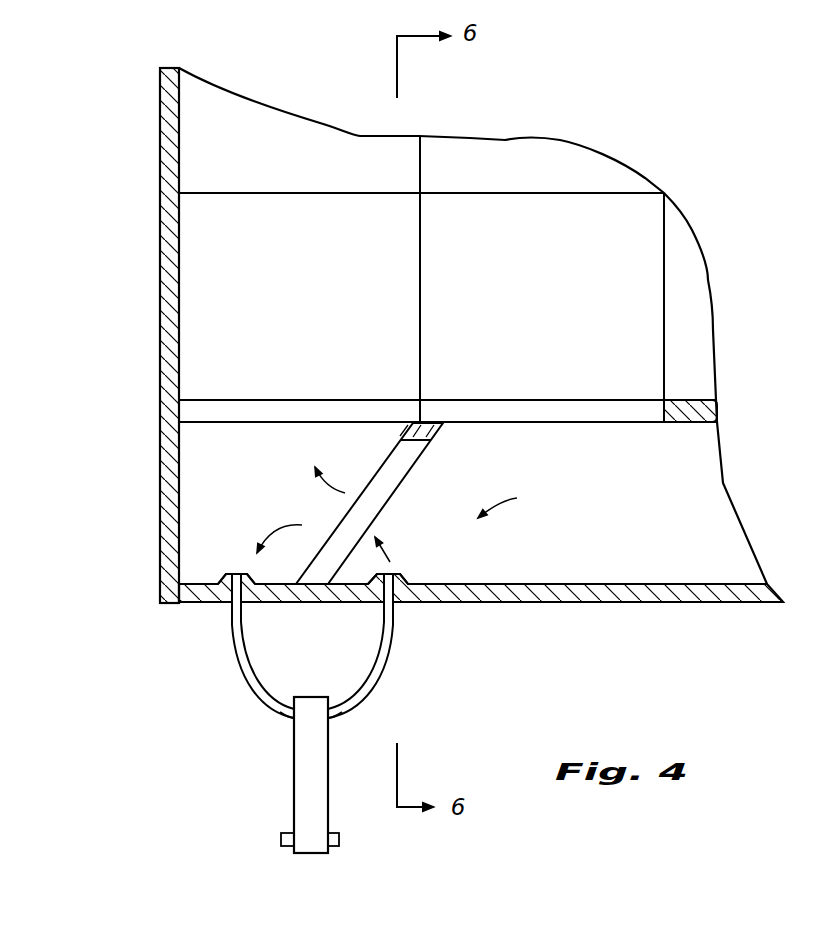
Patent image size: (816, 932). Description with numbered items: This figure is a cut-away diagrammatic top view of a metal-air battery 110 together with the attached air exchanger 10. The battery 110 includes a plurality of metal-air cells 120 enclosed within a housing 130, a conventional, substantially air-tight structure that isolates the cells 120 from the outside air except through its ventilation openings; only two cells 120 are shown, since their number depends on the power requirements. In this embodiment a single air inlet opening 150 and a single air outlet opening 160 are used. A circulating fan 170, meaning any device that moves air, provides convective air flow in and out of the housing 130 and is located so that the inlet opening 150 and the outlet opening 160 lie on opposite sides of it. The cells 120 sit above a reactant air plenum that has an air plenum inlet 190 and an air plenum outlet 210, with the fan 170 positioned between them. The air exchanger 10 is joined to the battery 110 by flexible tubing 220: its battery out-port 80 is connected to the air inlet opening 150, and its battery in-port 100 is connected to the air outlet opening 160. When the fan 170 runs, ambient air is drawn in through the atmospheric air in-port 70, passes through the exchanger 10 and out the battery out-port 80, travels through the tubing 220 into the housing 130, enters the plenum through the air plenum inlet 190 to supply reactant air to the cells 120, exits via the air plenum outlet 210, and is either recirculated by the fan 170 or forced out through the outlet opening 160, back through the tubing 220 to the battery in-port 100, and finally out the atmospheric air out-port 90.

The air exchanger 10 is at (294, 792).
The atmospheric air in-port 70 is at (342, 845).
The battery out-port 80 is at (330, 718).
The atmospheric air out-port 90 is at (278, 837).
The battery in-port 100 is at (293, 720).
The metal-air battery 110 is at (117, 183).
The metal-air cells 120 is at (285, 311).
The housing 130 is at (158, 226).
The air inlet opening 150 is at (407, 578).
The air outlet opening 160 is at (237, 573).
The circulating fan 170 is at (393, 497).
The air plenum inlet 190 is at (287, 414).
The air plenum outlet 210 is at (618, 407).
The flexible tubing 220 is at (237, 637).